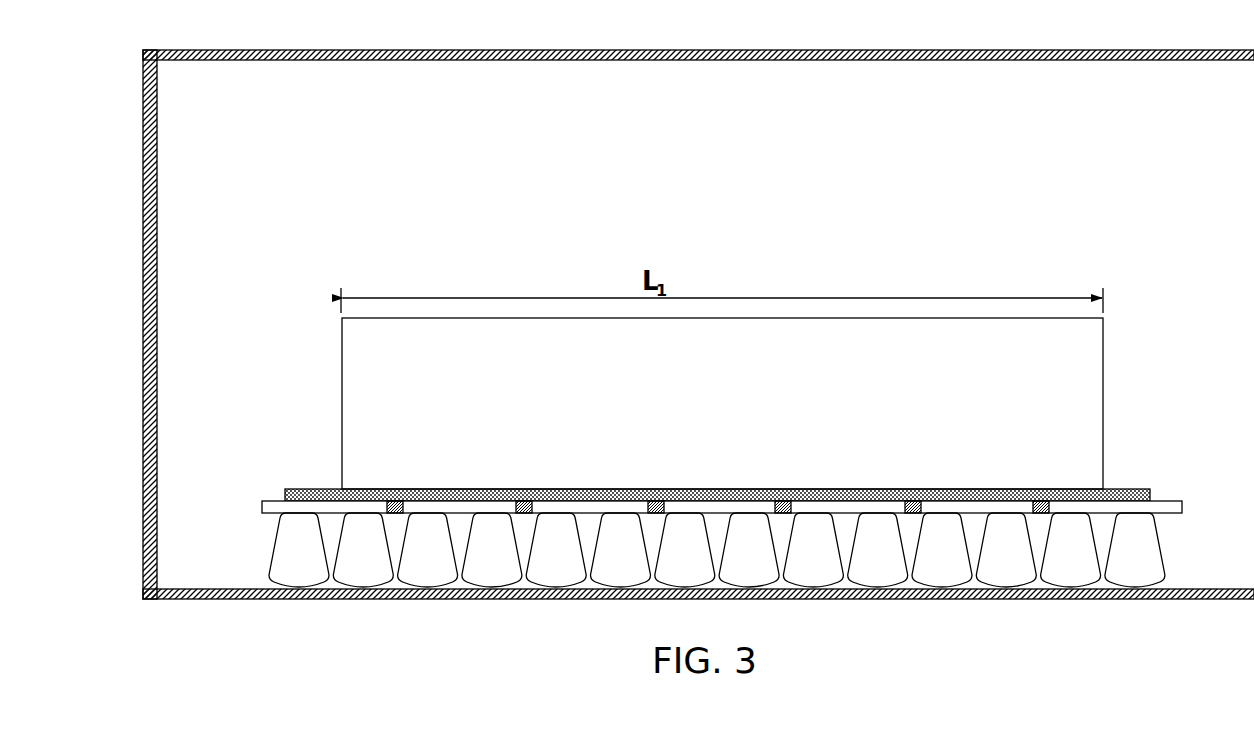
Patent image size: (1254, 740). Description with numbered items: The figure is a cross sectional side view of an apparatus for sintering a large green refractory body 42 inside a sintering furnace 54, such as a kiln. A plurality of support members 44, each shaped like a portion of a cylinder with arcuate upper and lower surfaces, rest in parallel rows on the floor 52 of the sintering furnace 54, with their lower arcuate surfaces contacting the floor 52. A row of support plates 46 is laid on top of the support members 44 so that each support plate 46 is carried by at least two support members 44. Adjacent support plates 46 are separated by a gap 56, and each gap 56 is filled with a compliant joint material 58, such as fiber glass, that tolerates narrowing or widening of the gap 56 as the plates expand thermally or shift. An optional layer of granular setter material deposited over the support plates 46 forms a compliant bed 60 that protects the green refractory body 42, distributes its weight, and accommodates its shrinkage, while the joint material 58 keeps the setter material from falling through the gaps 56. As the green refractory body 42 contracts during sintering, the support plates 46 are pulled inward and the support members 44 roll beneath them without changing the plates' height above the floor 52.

The green refractory body 42 is at (1104, 374).
The support members 44 is at (280, 540).
The support plates 46 is at (265, 500).
The floor 52 is at (228, 589).
The sintering furnace 54 is at (143, 102).
The gap 56 is at (406, 506).
The joint material 58 is at (655, 500).
The compliant bed 60 is at (315, 489).